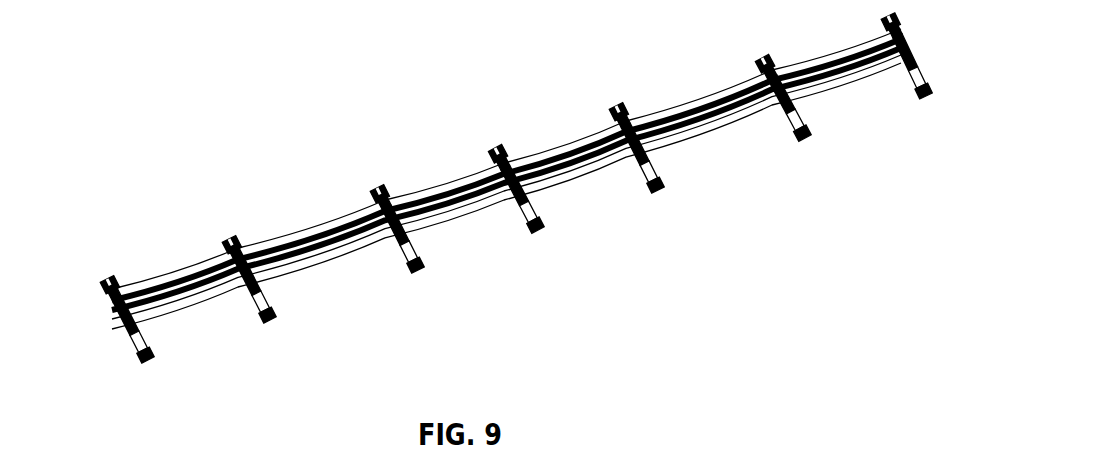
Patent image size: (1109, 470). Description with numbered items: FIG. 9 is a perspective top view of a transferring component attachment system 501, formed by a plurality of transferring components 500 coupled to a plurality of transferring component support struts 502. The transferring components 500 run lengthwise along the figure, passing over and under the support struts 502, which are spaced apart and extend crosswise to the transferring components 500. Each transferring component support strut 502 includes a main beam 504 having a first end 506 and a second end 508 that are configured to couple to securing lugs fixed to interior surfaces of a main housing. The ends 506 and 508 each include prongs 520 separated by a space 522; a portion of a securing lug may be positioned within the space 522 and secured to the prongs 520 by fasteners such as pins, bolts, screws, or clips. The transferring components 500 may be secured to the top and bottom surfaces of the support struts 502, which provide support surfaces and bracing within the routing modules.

The transferring component 500 is at (143, 284).
The transferring component attachment system 501 is at (137, 164).
The transferring component support strut 502 is at (134, 357).
The main beam 504 is at (133, 342).
The end 506 is at (112, 279).
The end 508 is at (153, 360).
The prong 520 is at (231, 240).
The space 522 is at (235, 246).